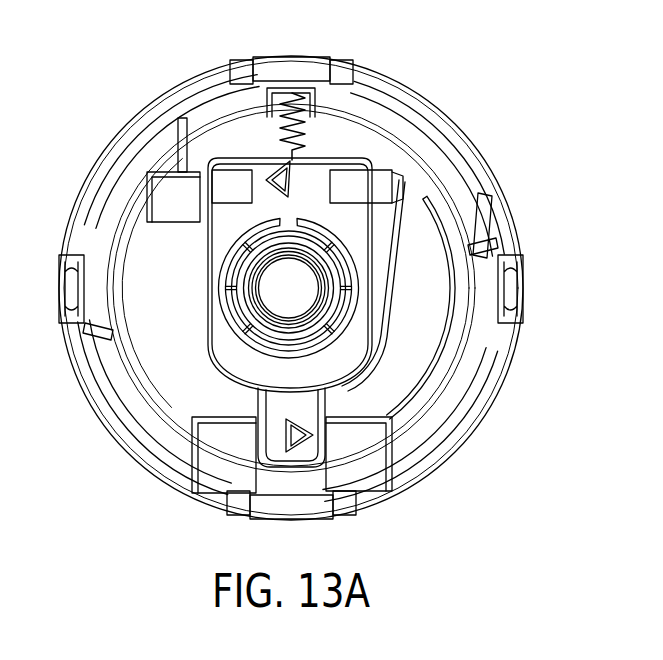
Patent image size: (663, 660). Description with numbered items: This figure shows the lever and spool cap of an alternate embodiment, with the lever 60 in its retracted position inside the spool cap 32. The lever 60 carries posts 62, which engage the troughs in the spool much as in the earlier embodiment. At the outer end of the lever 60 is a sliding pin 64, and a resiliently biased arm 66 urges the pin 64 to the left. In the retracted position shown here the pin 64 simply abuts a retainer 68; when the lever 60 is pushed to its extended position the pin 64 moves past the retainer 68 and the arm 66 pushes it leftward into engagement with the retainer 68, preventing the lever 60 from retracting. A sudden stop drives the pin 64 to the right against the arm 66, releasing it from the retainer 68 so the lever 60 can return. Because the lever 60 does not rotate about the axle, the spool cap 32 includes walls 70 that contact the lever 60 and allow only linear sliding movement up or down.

The spool cap 32 is at (457, 128).
The lever 60 is at (215, 357).
The posts 62 is at (282, 181).
The sliding pin 64 is at (217, 193).
The resiliently biased arm 66 is at (393, 265).
The retainer 68 is at (172, 192).
The walls 70 is at (240, 460).